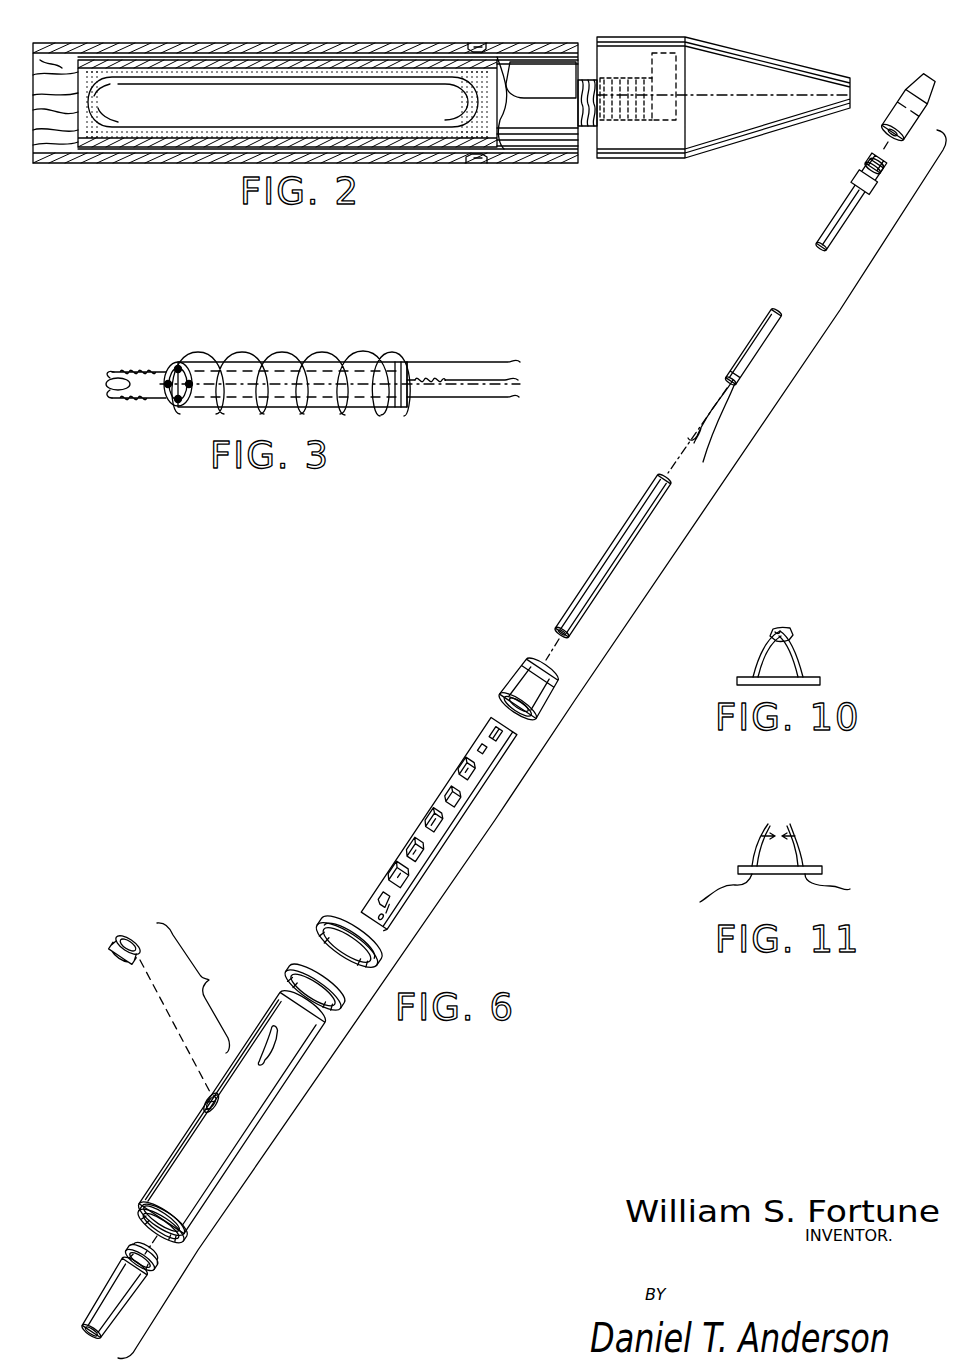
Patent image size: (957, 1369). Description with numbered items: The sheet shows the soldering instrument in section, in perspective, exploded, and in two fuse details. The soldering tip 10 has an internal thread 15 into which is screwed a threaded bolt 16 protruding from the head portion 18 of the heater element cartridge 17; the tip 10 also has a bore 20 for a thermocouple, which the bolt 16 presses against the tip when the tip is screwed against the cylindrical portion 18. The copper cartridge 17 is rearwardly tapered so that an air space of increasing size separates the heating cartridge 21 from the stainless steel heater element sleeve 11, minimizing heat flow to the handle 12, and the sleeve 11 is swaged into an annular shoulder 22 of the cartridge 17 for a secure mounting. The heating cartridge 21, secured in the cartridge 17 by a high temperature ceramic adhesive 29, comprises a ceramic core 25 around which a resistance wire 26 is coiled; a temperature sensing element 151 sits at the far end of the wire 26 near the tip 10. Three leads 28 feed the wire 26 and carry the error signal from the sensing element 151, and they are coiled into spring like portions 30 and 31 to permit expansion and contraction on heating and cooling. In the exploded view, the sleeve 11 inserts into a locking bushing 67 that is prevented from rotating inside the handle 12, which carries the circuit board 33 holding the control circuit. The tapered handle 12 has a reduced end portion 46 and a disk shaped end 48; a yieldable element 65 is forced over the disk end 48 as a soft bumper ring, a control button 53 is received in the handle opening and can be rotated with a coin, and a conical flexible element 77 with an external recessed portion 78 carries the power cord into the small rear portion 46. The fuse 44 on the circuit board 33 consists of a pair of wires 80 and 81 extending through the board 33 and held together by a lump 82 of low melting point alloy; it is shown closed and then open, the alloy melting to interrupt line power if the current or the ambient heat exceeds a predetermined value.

In FIG. 2, the soldering tip 10 is at (775, 130).
In FIG. 6, the soldering tip 10 is at (896, 100).
In FIG. 2, the heater element sleeve 11 is at (246, 44).
In FIG. 6, the heater element sleeve 11 is at (614, 553).
In FIG. 6, the handle 12 is at (278, 1010).
In FIG. 2, the internal thread 15 is at (606, 84).
In FIG. 2, the threaded bolt 16 is at (586, 128).
In FIG. 6, the threaded bolt 16 is at (873, 150).
In FIG. 2, the heater element cartridge 17 is at (362, 48).
In FIG. 6, the heater element cartridge 17 is at (828, 226).
In FIG. 2, the head portion 18 is at (548, 48).
In FIG. 2, the bore 20 is at (664, 48).
In FIG. 2, the heating cartridge 21 is at (298, 106).
In FIG. 3, the heating cartridge 21 is at (346, 350).
In FIG. 6, the heating cartridge 21 is at (754, 346).
In FIG. 2, the annular shoulder 22 is at (476, 48).
In FIG. 3, the ceramic core 25 is at (388, 408).
In FIG. 3, the resistance wire 26 is at (240, 358).
In FIG. 3, the leads 28 is at (520, 374).
In FIG. 2, the ceramic adhesive 29 is at (412, 135).
In FIG. 3, the spring like portion 30 is at (128, 404).
In FIG. 3, the spring like portion 31 is at (442, 372).
In FIG. 6, the circuit board 33 is at (480, 730).
In FIG. 10, the circuit board 33 is at (822, 680).
In FIG. 11, the circuit board 33 is at (824, 870).
In FIG. 10, the fuse 44 is at (770, 630).
In FIG. 11, the fuse 44 is at (776, 834).
In FIG. 6, the reduced end portion 46 is at (152, 1222).
In FIG. 6, the disk shaped end 48 is at (296, 984).
In FIG. 6, the control button 53 is at (126, 932).
In FIG. 6, the yieldable element 65 is at (334, 930).
In FIG. 6, the locking bushing 67 is at (506, 688).
In FIG. 6, the flexible element 77 is at (100, 1300).
In FIG. 6, the external recessed portion 78 is at (126, 1258).
In FIG. 10, the wire 80 is at (757, 660).
In FIG. 11, the wire 80 is at (751, 840).
In FIG. 10, the wire 81 is at (802, 654).
In FIG. 11, the wire 81 is at (806, 840).
In FIG. 10, the lump of low melting point alloy 82 is at (772, 634).
In FIG. 3, the temperature sensing element 151 is at (112, 392).